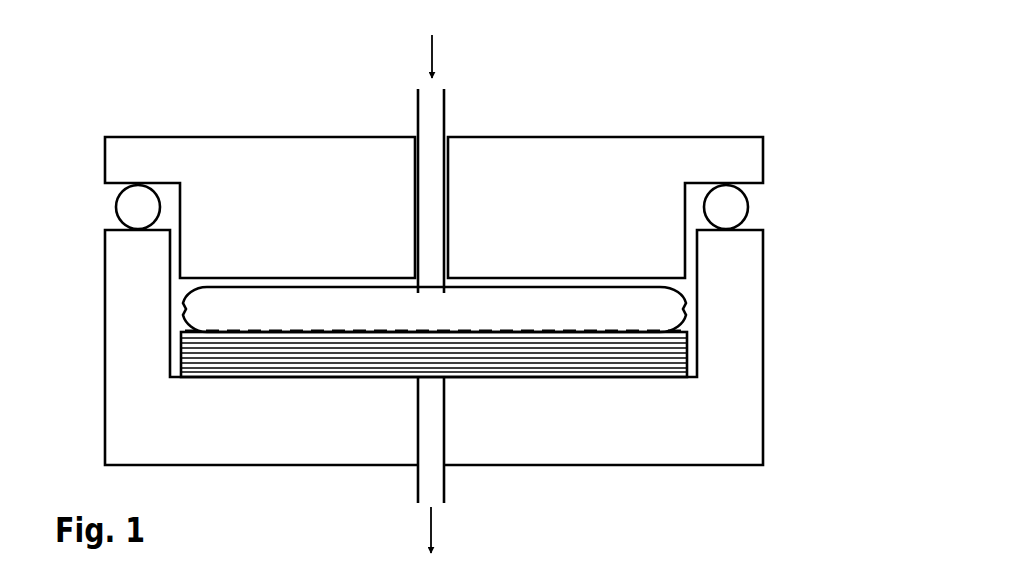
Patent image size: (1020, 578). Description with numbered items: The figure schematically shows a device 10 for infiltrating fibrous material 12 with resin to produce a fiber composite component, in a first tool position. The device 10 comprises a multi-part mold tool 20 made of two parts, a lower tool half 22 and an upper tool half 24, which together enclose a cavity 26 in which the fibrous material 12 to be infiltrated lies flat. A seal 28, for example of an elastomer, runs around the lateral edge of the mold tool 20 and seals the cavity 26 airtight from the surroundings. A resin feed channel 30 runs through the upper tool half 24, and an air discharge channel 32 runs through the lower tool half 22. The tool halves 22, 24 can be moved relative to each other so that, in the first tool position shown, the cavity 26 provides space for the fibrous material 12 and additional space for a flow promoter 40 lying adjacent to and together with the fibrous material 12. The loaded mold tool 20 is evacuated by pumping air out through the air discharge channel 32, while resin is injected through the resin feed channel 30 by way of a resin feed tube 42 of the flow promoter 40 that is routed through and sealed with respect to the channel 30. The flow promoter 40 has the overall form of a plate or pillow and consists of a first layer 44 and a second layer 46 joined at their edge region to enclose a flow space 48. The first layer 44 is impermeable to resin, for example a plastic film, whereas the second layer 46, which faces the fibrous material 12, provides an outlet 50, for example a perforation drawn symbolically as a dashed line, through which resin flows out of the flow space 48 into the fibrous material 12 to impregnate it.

The device 10 is at (203, 92).
The fibrous material 12 is at (318, 356).
The mold tool 20 is at (775, 257).
The lower tool half 22 is at (657, 450).
The upper tool half 24 is at (604, 153).
The cavity 26 is at (180, 290).
The seal 28 is at (742, 208).
The resin feed channel 30 is at (450, 208).
The air discharge channel 32 is at (440, 415).
The flow promoter 40 is at (320, 302).
The resin feed tube 42 is at (448, 115).
The first layer 44 is at (247, 290).
The second layer 46 is at (188, 315).
The flow space 48 is at (375, 307).
The outlet 50 is at (473, 328).